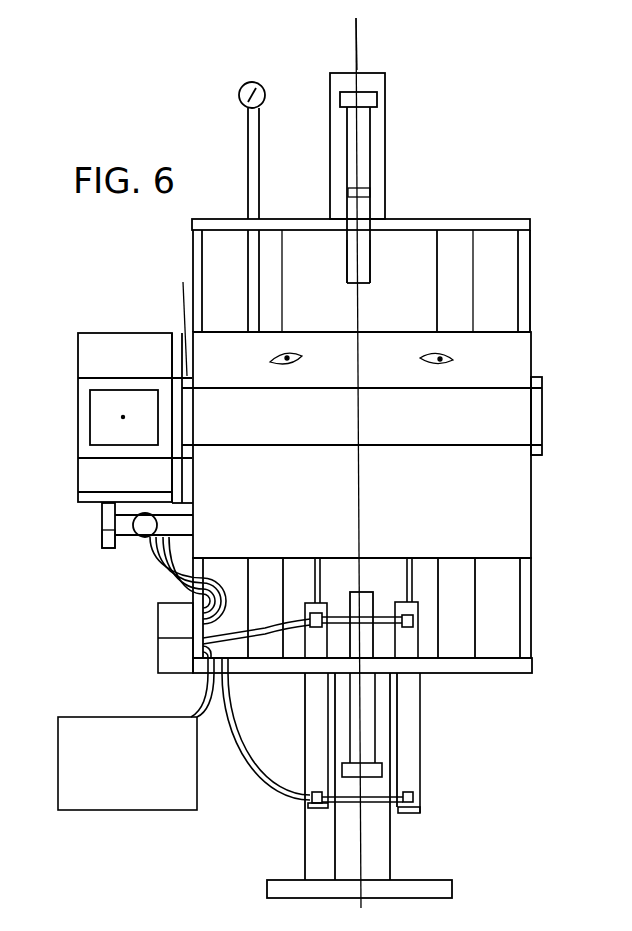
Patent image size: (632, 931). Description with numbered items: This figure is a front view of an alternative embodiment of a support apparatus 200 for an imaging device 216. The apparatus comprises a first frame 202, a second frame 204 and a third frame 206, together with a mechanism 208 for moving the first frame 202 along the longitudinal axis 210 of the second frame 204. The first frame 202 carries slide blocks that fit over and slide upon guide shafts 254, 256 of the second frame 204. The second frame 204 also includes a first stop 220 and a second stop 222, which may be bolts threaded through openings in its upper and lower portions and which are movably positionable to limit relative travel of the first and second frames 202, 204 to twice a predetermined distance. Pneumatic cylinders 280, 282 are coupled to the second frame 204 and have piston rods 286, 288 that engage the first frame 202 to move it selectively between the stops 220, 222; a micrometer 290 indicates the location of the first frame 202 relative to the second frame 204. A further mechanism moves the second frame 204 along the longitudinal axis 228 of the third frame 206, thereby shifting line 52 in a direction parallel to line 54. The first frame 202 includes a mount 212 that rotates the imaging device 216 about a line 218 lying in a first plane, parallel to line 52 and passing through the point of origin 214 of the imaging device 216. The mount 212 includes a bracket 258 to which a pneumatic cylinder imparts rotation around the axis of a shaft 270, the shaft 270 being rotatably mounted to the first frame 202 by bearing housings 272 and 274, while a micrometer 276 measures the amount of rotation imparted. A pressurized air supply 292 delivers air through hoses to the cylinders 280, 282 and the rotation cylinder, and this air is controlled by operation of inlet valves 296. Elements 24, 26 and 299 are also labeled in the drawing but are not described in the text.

The support apparatus 200 is at (538, 205).
The longitudinal axis 210 is at (358, 46).
The longitudinal axis 228 is at (356, 35).
The third frame 206 is at (433, 160).
The first stop 220 is at (357, 185).
The line 54 is at (358, 308).
The micrometer 290 is at (265, 91).
The guide shaft 254 is at (473, 260).
The second frame 204 is at (578, 297).
The guide shaft 256 is at (283, 303).
The first frame 202 is at (580, 359).
The line 52 is at (383, 363).
The nozzle 26 is at (279, 365).
The nozzle 24 is at (446, 364).
The shaft 270 is at (385, 448).
The line 218 is at (562, 409).
The bearing housing 274 is at (538, 456).
The imaging device 216 is at (78, 353).
The bracket 258 is at (177, 332).
The point of origin 214 is at (123, 417).
The bearing housing 272 is at (165, 316).
The mount 212 is at (101, 520).
The micrometer 276 is at (107, 542).
The inlet valves 296 is at (158, 622).
The piston rod 286 is at (321, 575).
The piston rod 288 is at (413, 577).
The mechanism 208 is at (303, 570).
The air supply line 299 is at (278, 710).
The pressurized air supply 292 is at (118, 812).
The second stop 222 is at (363, 722).
The pneumatic cylinder 280 is at (315, 755).
The pneumatic cylinder 282 is at (412, 777).